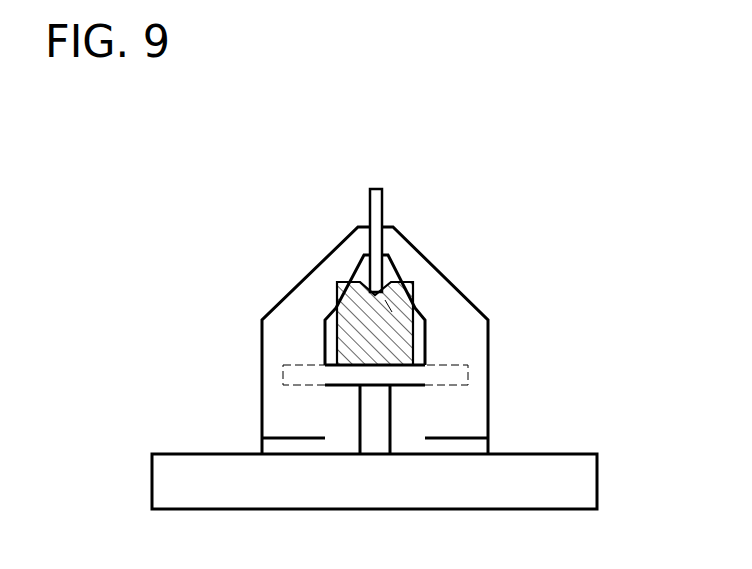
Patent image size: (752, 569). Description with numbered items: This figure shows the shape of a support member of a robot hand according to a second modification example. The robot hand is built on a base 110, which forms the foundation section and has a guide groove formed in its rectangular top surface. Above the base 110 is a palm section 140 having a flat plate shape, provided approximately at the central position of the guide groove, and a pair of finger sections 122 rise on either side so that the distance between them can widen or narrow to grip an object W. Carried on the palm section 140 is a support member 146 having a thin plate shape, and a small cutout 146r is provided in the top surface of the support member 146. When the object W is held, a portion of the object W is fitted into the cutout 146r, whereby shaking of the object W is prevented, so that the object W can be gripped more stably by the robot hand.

The finger section 122 is at (303, 268).
The support member 146 is at (323, 332).
The cutout 146r is at (386, 307).
The palm section 140 is at (470, 376).
The object W is at (372, 189).
The base 110 is at (597, 482).